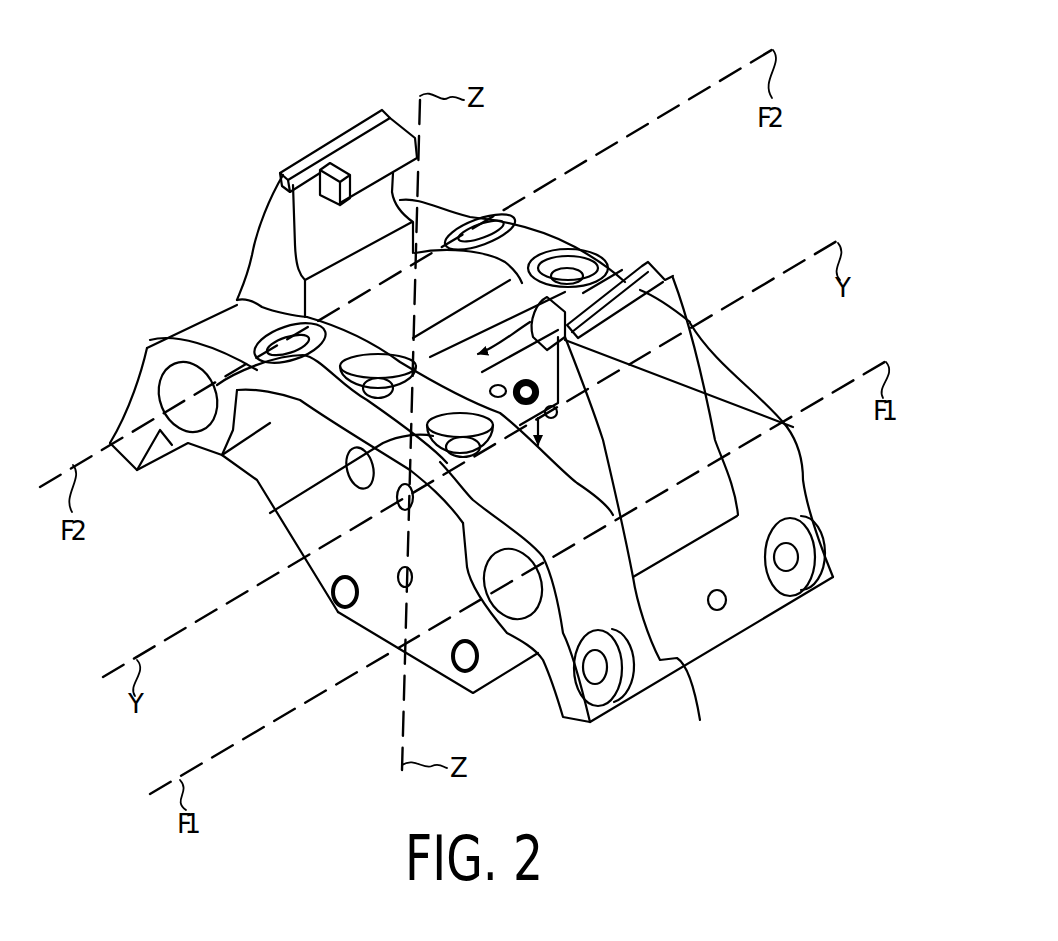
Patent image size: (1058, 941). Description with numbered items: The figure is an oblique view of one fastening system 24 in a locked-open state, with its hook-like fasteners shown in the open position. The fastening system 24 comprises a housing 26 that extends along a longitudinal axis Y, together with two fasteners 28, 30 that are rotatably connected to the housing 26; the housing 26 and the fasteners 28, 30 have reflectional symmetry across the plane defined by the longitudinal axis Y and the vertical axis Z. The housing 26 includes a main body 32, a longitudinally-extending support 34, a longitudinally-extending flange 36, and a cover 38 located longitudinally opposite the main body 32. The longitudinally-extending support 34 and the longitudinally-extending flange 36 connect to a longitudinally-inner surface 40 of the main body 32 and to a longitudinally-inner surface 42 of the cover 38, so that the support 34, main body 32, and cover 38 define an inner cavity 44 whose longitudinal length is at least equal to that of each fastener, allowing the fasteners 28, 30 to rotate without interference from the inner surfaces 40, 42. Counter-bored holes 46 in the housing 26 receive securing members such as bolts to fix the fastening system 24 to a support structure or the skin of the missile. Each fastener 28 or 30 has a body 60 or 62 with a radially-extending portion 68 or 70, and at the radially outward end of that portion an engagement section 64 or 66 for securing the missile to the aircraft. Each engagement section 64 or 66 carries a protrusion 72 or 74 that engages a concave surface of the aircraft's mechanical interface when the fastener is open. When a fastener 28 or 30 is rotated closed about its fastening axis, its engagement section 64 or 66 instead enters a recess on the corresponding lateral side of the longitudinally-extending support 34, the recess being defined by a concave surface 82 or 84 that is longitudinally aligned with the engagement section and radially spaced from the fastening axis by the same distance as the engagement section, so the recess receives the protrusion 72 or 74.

The fastening system 24 is at (840, 495).
The housing 26 is at (720, 657).
The fastener 28 is at (686, 294).
The fastener 30 is at (392, 108).
The main body 32 is at (780, 467).
The longitudinally-extending support 34 is at (543, 232).
The longitudinally-extending flange 36 is at (757, 610).
The cover 38 is at (560, 700).
The longitudinally-inner surface 40 is at (437, 265).
The longitudinally-inner surface 42 is at (685, 663).
The inner cavity 44 is at (478, 288).
The counter-bored holes 46 is at (485, 218).
The body 60 is at (668, 431).
The body 62 is at (278, 264).
The engagement section 64 is at (655, 270).
The engagement section 66 is at (322, 210).
The radially-extending portion 68 is at (693, 358).
The radially-extending portion 70 is at (262, 218).
The protrusion 72 is at (688, 314).
The protrusion 74 is at (370, 155).
The concave surface 82 is at (793, 428).
The concave surface 84 is at (400, 318).